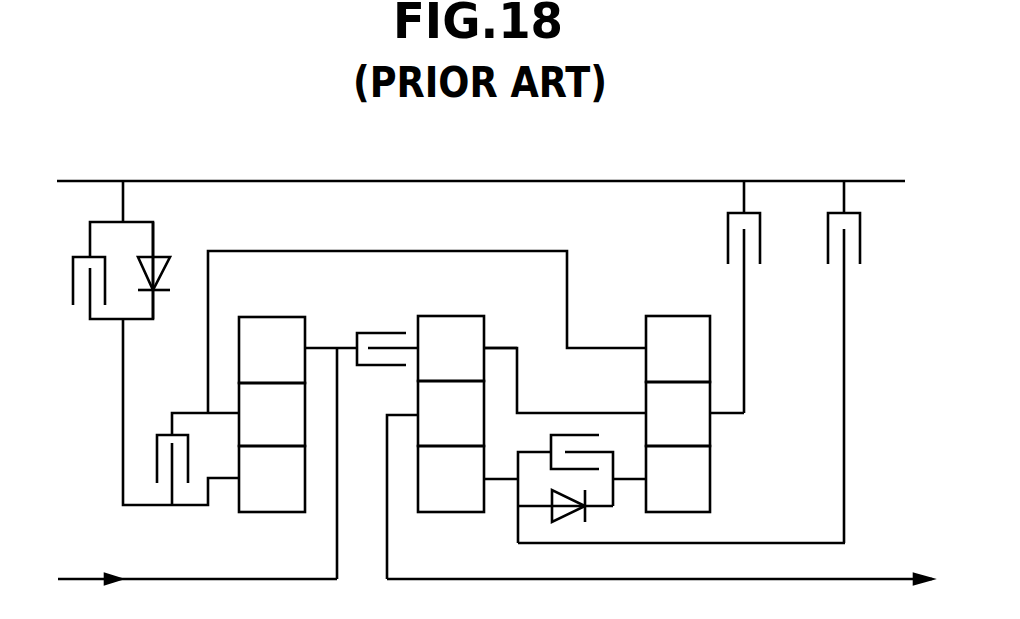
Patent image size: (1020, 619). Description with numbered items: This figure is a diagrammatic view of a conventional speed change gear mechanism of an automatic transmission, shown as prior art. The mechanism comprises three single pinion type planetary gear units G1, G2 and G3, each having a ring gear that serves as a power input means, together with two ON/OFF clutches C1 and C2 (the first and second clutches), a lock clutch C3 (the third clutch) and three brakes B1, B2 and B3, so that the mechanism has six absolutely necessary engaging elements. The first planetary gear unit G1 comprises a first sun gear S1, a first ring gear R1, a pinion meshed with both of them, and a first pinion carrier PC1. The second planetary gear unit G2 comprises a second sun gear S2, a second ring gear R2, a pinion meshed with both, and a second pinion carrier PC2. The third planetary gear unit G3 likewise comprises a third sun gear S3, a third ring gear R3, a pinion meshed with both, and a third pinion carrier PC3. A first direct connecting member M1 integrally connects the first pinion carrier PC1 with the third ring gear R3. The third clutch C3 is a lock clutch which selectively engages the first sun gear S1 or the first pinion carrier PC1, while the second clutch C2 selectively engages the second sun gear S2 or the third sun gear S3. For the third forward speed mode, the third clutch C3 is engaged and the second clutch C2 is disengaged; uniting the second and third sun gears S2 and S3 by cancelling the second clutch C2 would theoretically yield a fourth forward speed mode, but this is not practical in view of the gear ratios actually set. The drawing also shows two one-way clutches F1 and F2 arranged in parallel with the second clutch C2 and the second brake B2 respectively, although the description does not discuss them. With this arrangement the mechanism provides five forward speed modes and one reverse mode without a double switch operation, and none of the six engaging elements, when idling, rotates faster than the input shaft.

The first brake B1 is at (725, 297).
The second brake B2 is at (102, 270).
The third brake B3 is at (862, 362).
The first clutch C1 is at (387, 334).
The second clutch C2 is at (574, 431).
The third clutch C3 is at (162, 455).
The first one-way clutch F1 is at (573, 522).
The second one-way clutch F2 is at (164, 270).
The first planetary gear unit G1 is at (290, 304).
The second planetary gear unit G2 is at (472, 305).
The third planetary gear unit G3 is at (697, 305).
The first direct connecting member M1 is at (508, 347).
The first ring gear R1 is at (272, 350).
The first pinion carrier PC1 is at (272, 414).
The first sun gear S1 is at (272, 479).
The second ring gear R2 is at (451, 348).
The second pinion carrier PC2 is at (451, 413).
The second sun gear S2 is at (451, 479).
The third ring gear R3 is at (678, 349).
The third pinion carrier PC3 is at (678, 414).
The third sun gear S3 is at (678, 479).